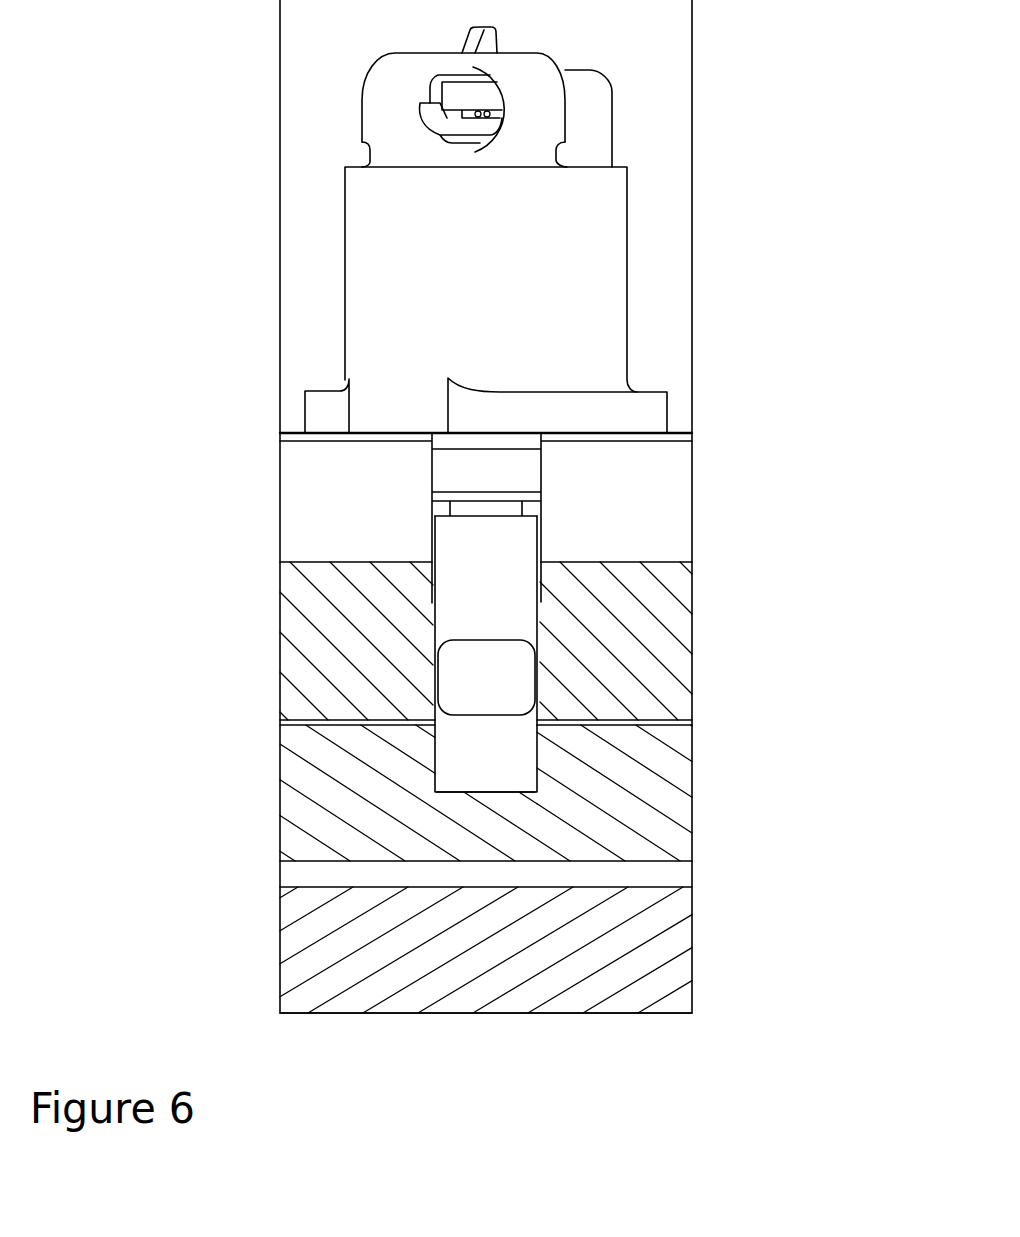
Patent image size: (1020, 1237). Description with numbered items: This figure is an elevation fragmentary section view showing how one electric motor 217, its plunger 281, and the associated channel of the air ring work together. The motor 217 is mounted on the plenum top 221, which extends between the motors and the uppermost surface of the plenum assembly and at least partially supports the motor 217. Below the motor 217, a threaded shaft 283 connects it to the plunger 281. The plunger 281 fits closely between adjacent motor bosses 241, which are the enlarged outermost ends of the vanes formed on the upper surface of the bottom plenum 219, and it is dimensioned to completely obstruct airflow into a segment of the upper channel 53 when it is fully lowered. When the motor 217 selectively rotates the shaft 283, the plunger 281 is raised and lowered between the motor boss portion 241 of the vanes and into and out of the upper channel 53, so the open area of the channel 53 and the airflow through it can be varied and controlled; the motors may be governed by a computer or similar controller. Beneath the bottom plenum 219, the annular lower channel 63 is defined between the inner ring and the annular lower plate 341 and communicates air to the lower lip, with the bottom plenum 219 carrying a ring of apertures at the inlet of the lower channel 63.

The electric motor 217 is at (530, 312).
The threaded shaft 283 is at (483, 507).
The plunger 281 is at (477, 610).
The plenum top 221 is at (633, 647).
The upper channel 53 is at (472, 785).
The motor boss 241 is at (652, 762).
The bottom plenum 219 is at (332, 830).
The lower channel 63 is at (653, 872).
The lower plate 341 is at (620, 945).